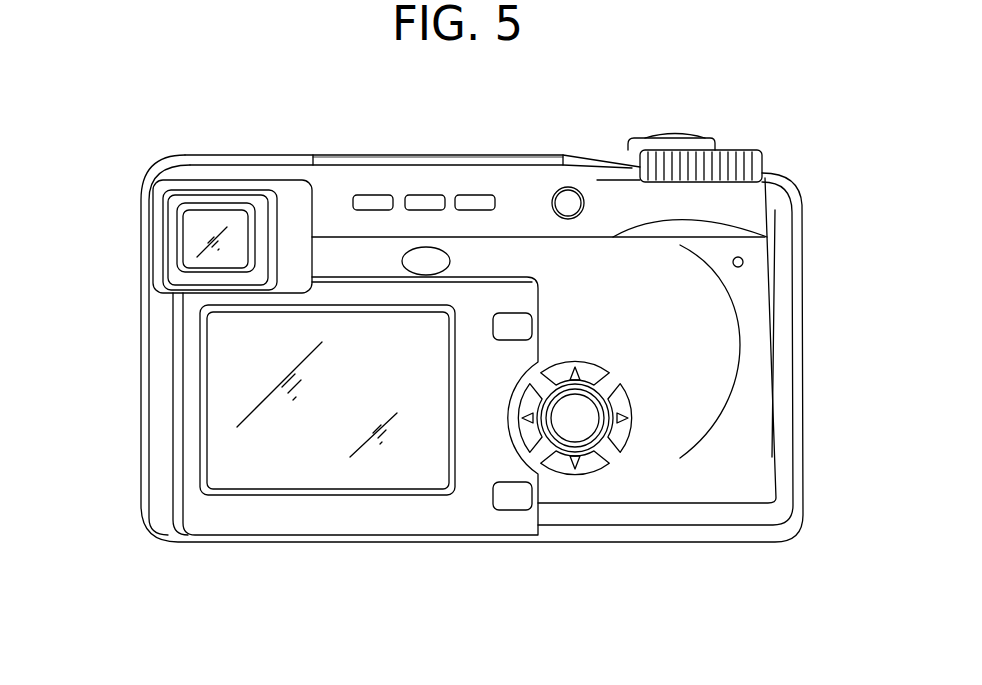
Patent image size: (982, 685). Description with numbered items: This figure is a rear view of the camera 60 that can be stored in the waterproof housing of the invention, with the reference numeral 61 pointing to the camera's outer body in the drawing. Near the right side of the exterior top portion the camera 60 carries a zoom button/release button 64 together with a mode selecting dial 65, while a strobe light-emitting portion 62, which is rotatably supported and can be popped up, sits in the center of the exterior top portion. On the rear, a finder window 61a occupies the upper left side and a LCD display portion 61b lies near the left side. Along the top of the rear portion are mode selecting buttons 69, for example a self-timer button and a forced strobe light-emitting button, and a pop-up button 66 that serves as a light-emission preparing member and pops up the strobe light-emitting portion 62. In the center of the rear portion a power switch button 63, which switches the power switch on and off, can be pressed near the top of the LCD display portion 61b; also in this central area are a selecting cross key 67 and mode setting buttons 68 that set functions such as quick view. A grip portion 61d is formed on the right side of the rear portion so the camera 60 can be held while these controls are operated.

The camera 60 is at (154, 156).
The camera body 61 is at (141, 372).
The finder window 61a is at (242, 218).
The LCD display portion 61b is at (243, 468).
The grip portion 61d is at (723, 360).
The strobe light-emitting portion 62 is at (343, 156).
The power switch button 63 is at (433, 258).
The zoom button/release button 64 is at (677, 135).
The mode selecting dial 65 is at (750, 148).
The pop-up button 66 is at (570, 200).
The selecting cross key 67 is at (627, 432).
The mode setting buttons 68 is at (510, 330).
The mode selecting buttons 69 is at (475, 203).